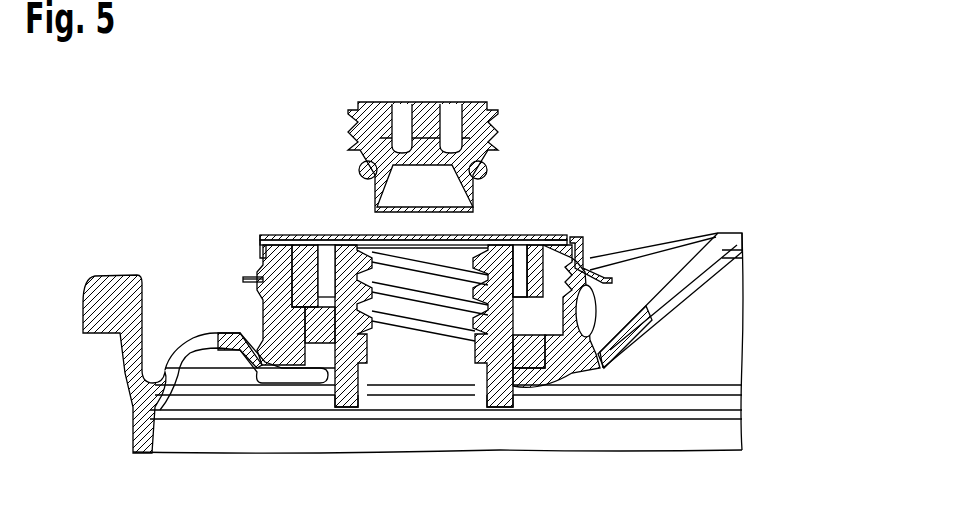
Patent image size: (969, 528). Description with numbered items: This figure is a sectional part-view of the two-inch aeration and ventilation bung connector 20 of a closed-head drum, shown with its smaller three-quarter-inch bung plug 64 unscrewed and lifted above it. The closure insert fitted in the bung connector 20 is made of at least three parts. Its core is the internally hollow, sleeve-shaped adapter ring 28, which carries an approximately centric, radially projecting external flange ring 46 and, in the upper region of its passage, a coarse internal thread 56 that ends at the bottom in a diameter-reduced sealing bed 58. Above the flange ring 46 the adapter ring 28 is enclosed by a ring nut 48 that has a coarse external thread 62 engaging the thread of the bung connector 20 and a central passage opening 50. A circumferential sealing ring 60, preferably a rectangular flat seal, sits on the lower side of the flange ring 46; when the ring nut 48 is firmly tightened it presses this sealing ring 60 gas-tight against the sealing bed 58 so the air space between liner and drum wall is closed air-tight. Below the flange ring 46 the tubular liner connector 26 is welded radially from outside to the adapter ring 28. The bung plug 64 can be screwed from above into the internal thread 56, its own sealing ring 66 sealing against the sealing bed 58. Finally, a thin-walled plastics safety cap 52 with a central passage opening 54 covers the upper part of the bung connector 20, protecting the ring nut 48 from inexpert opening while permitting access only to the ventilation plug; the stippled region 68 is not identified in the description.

The aeration and ventilation bung connector 20 is at (282, 342).
The tubular liner connector 26 is at (335, 360).
The adapter ring 28 is at (340, 413).
The flange ring 46 is at (587, 265).
The ring nut 48 is at (552, 235).
The central passage opening 50 is at (520, 250).
The safety cap 52 is at (262, 260).
The central passage opening 54 is at (347, 233).
The internal thread 56 is at (400, 305).
The sealing bed 58 is at (463, 318).
The sealing ring 60 is at (547, 325).
The external thread 62 is at (262, 288).
The bung plug 64 is at (478, 120).
The sealing ring 66 is at (359, 165).
The filler block 68 is at (413, 383).